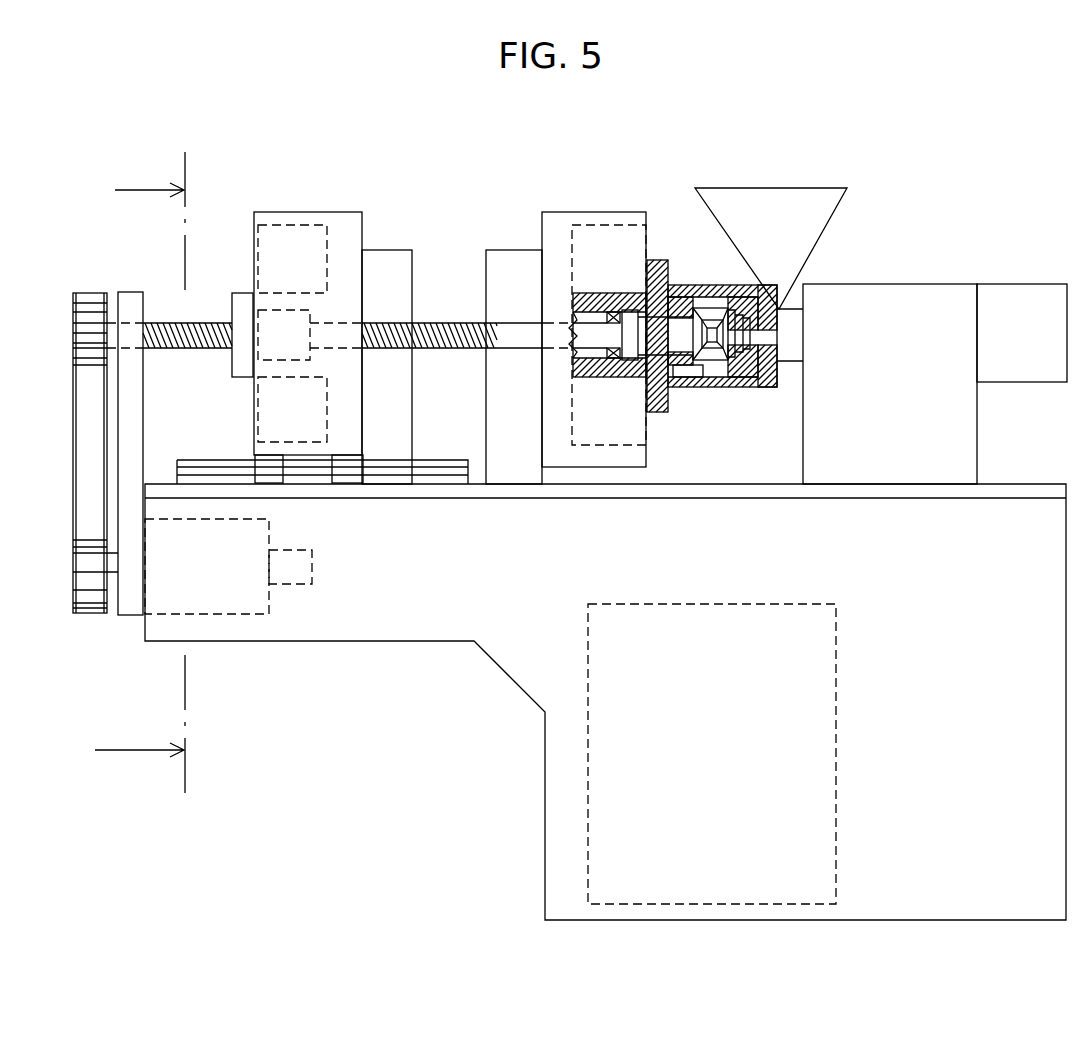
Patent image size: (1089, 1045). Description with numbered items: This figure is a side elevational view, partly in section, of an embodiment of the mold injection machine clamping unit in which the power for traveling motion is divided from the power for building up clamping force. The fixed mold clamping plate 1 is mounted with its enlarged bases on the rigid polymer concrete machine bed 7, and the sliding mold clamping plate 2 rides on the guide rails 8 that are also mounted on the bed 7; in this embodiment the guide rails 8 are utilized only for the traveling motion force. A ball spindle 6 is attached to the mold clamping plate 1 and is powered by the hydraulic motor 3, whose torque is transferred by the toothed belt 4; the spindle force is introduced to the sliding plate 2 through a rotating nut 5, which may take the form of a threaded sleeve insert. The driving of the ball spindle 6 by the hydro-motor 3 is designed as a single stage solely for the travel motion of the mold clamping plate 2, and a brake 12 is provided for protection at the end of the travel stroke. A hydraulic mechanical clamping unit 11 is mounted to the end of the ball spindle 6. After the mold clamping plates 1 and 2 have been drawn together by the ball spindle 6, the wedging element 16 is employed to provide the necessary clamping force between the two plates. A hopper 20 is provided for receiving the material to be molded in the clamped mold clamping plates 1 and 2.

The fixed mold clamping plate 1 is at (598, 237).
The sliding mold clamping plate 2 is at (285, 235).
The hydraulic motor 3 is at (217, 587).
The toothed belt 4 is at (94, 385).
The rotating nut 5 is at (243, 302).
The ball spindle 6 is at (428, 328).
The machine bed 7 is at (964, 690).
The guide rail 8 is at (423, 480).
The hydraulic mechanical clamping unit 11 is at (680, 285).
The brake 12 is at (293, 568).
The wedging element 16 is at (733, 387).
The hopper 20 is at (791, 178).